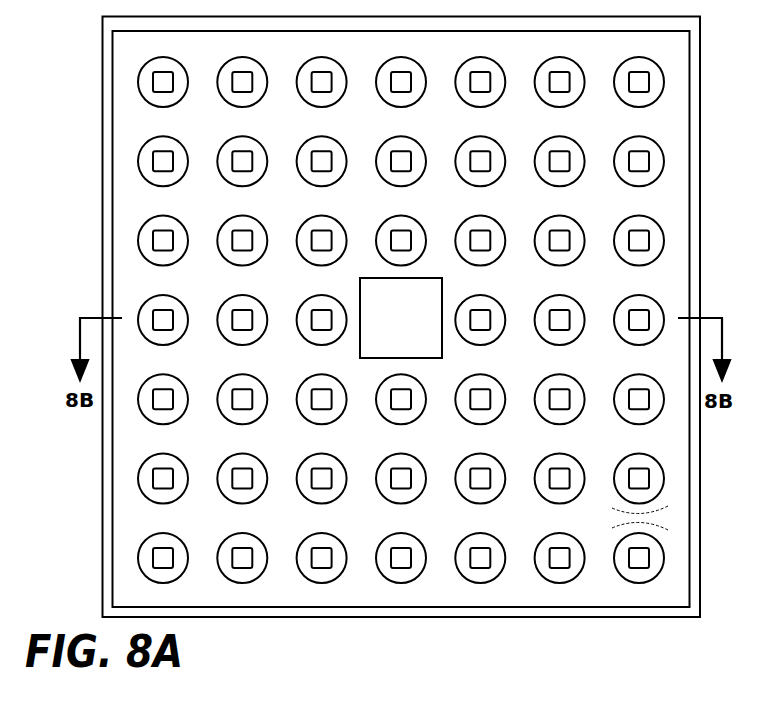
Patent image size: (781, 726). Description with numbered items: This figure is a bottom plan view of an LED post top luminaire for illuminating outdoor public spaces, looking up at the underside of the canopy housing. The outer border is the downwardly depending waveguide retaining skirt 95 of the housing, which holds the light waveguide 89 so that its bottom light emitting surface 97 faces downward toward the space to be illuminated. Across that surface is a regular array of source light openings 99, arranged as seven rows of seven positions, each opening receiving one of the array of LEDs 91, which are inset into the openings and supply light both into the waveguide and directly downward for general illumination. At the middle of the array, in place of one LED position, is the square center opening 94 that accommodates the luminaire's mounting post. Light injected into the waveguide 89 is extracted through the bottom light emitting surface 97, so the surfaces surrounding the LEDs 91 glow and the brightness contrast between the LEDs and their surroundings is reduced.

The light waveguide 89 is at (683, 267).
The array of LEDs 91 is at (155, 238).
The center opening 94 is at (432, 358).
The waveguide retaining skirt 95 is at (597, 612).
The bottom light emitting surface 97 is at (273, 583).
The source light openings 99 is at (222, 411).